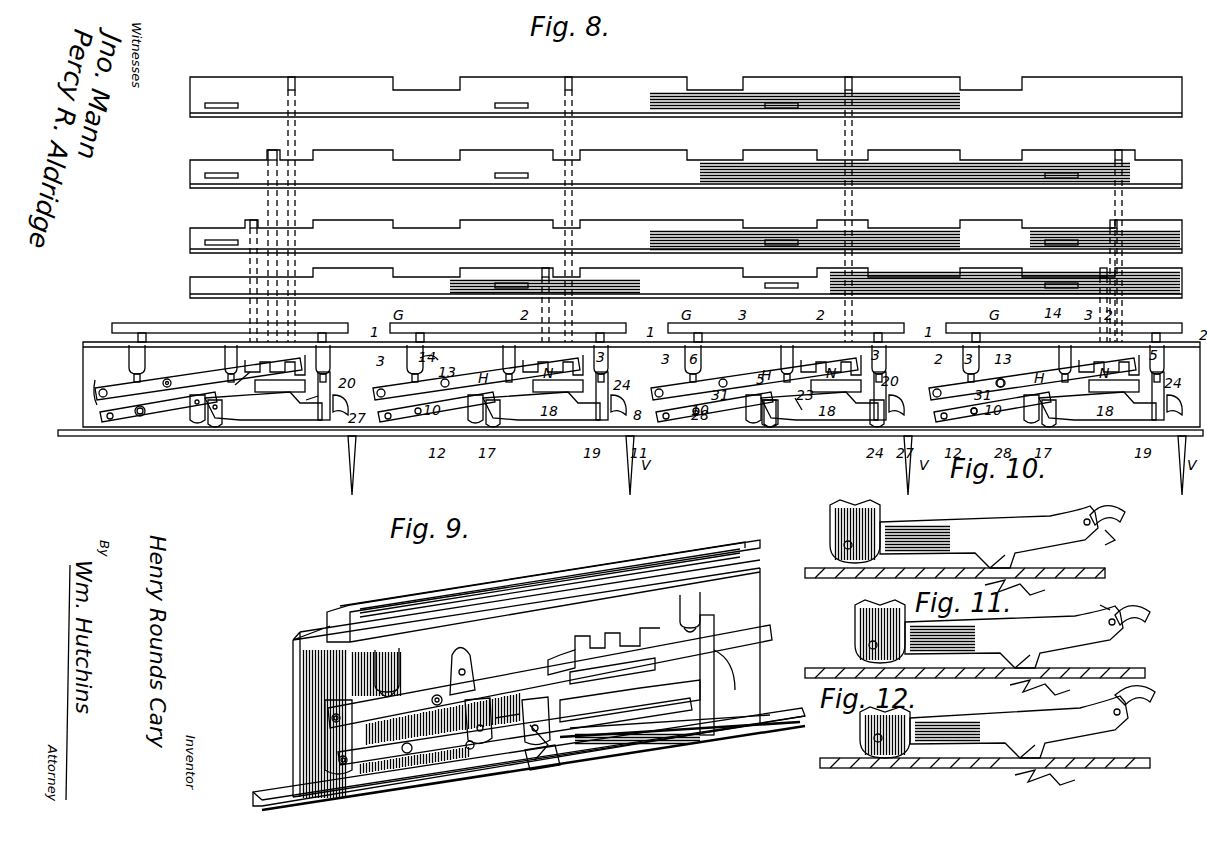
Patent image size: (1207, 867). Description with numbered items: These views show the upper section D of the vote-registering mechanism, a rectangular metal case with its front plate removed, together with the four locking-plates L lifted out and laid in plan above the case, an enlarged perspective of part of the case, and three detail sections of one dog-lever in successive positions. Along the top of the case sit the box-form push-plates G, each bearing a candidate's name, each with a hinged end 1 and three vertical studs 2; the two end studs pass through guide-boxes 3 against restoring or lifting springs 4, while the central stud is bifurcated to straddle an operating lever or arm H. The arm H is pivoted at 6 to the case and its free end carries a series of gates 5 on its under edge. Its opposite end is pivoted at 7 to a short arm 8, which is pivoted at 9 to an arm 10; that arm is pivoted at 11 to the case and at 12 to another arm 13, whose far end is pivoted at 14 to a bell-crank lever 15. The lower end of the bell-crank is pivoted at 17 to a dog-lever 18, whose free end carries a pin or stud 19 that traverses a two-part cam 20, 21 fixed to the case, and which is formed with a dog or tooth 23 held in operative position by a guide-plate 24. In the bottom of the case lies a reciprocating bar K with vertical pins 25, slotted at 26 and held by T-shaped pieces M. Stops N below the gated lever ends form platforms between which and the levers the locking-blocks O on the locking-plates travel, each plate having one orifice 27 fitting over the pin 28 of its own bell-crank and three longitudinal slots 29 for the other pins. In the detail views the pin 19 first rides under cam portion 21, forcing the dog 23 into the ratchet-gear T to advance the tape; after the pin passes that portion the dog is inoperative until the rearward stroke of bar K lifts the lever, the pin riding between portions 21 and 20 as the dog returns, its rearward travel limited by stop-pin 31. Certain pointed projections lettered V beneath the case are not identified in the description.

In FIG. 8, the hinged end 1 is at (98, 333).
In FIG. 9, the hinged end 1 is at (358, 620).
In FIG. 8, the vertical studs 2 is at (146, 334).
In FIG. 9, the vertical studs 2 is at (712, 628).
In FIG. 8, the guide-boxes 3 is at (190, 361).
In FIG. 9, the guide-boxes 3 is at (537, 642).
In FIG. 8, the restoring or lifting springs 4 is at (693, 97).
In FIG. 8, the gates 5 is at (277, 357).
In FIG. 9, the gates 5 is at (617, 645).
In FIG. 8, the pivot 6 is at (168, 379).
In FIG. 9, the pivot 6 is at (443, 699).
In FIG. 8, the pivot 7 is at (103, 385).
In FIG. 9, the pivot 7 is at (330, 708).
In FIG. 8, the short arm 8 is at (99, 395).
In FIG. 9, the short arm 8 is at (333, 722).
In FIG. 8, the pivot 9 is at (106, 417).
In FIG. 9, the pivot 9 is at (343, 765).
In FIG. 8, the arm 10 is at (158, 407).
In FIG. 9, the arm 10 is at (515, 731).
In FIG. 8, the pivot 11 is at (138, 416).
In FIG. 9, the pivot 11 is at (406, 753).
In FIG. 10, the pivot 11 is at (856, 530).
In FIG. 11, the pivot 11 is at (881, 630).
In FIG. 12, the pivot 11 is at (883, 760).
In FIG. 8, the pivot 12 is at (195, 420).
In FIG. 9, the pivot 12 is at (478, 735).
In FIG. 8, the arm 13 is at (1000, 379).
In FIG. 9, the arm 13 is at (462, 680).
In FIG. 8, the pivot 14 is at (1040, 355).
In FIG. 9, the pivot 14 is at (462, 650).
In FIG. 8, the bell-crank lever 15 is at (244, 386).
In FIG. 9, the bell-crank lever 15 is at (508, 664).
In FIG. 10, the bell-crank lever 15 is at (832, 512).
In FIG. 11, the bell-crank lever 15 is at (867, 631).
In FIG. 12, the bell-crank lever 15 is at (872, 731).
In FIG. 8, the pivot 17 is at (768, 425).
In FIG. 9, the pivot 17 is at (530, 745).
In FIG. 8, the dog-lever 18 is at (263, 406).
In FIG. 9, the dog-lever 18 is at (630, 701).
In FIG. 10, the dog-lever 18 is at (989, 537).
In FIG. 11, the dog-lever 18 is at (1014, 637).
In FIG. 12, the dog-lever 18 is at (1019, 727).
In FIG. 8, the pin or stud 19 is at (878, 425).
In FIG. 10, the pin or stud 19 is at (1085, 519).
In FIG. 11, the pin or stud 19 is at (1098, 631).
In FIG. 12, the pin or stud 19 is at (1131, 727).
In FIG. 8, the cam portion 20 is at (334, 396).
In FIG. 9, the cam portion 20 is at (707, 675).
In FIG. 10, the cam portion 20 is at (1125, 512).
In FIG. 11, the cam portion 20 is at (1149, 615).
In FIG. 12, the cam portion 20 is at (1151, 695).
In FIG. 8, the cam portion 21 is at (348, 411).
In FIG. 10, the cam portion 21 is at (1104, 546).
In FIG. 11, the cam portion 21 is at (1084, 613).
In FIG. 8, the dog or tooth 23 is at (804, 398).
In FIG. 10, the dog or tooth 23 is at (1012, 565).
In FIG. 11, the dog or tooth 23 is at (1041, 660).
In FIG. 12, the dog or tooth 23 is at (1046, 737).
In FIG. 8, the guide-plate 24 is at (307, 407).
In FIG. 9, the guide-plate 24 is at (712, 670).
In FIG. 9, the vertical pins 25 is at (540, 770).
In FIG. 9, the slots 26 is at (522, 738).
In FIG. 8, the orifice 27 is at (641, 191).
In FIG. 8, the pin 28 is at (974, 415).
In FIG. 8, the longitudinal slots 29 is at (651, 186).
In FIG. 8, the stop-pin or projection 31 is at (213, 425).
In FIG. 9, the stop-pin or projection 31 is at (518, 722).
In FIG. 8, the upper section D is at (86, 380).
In FIG. 9, the upper section D is at (735, 572).
In FIG. 10, the upper section D is at (825, 578).
In FIG. 11, the upper section D is at (975, 665).
In FIG. 12, the upper section D is at (985, 752).
In FIG. 8, the push-plates G is at (150, 326).
In FIG. 8, the operating lever or arm H is at (198, 379).
In FIG. 9, the operating lever or arm H is at (550, 676).
In FIG. 9, the reciprocating bar K is at (280, 800).
In FIG. 8, the locking-plates L is at (346, 190).
In FIG. 9, the T-shaped pieces M is at (730, 722).
In FIG. 8, the stops N is at (280, 378).
In FIG. 9, the stops N is at (612, 683).
In FIG. 8, the locking-blocks O is at (295, 88).
In FIG. 10, the ratchet-gear T is at (1022, 589).
In FIG. 11, the ratchet-gear T is at (1040, 692).
In FIG. 12, the ratchet-gear T is at (1045, 785).
In FIG. 8, the spike V is at (354, 462).